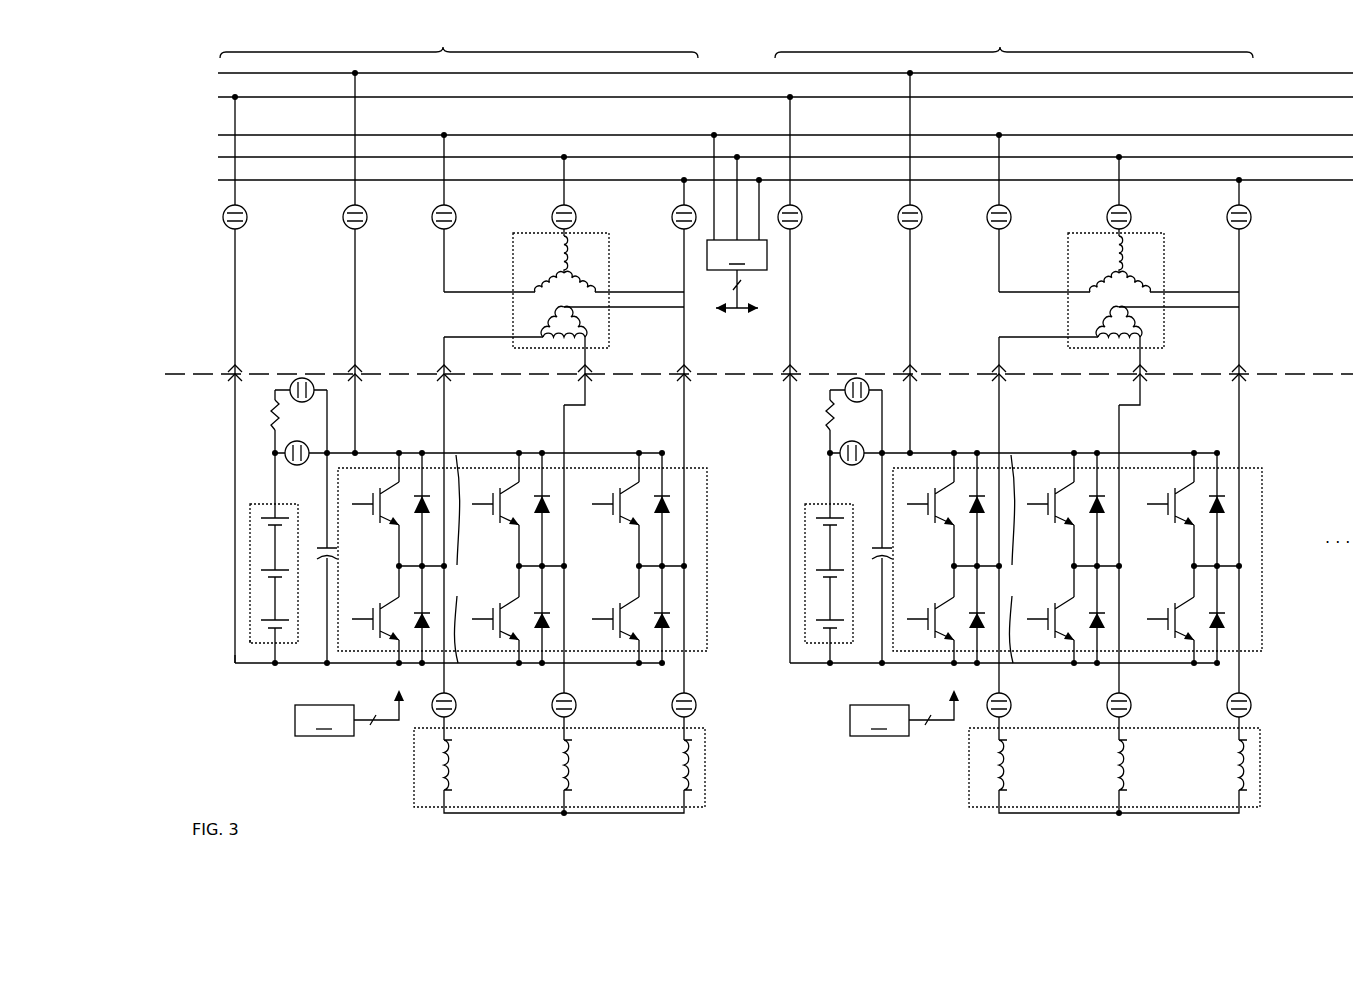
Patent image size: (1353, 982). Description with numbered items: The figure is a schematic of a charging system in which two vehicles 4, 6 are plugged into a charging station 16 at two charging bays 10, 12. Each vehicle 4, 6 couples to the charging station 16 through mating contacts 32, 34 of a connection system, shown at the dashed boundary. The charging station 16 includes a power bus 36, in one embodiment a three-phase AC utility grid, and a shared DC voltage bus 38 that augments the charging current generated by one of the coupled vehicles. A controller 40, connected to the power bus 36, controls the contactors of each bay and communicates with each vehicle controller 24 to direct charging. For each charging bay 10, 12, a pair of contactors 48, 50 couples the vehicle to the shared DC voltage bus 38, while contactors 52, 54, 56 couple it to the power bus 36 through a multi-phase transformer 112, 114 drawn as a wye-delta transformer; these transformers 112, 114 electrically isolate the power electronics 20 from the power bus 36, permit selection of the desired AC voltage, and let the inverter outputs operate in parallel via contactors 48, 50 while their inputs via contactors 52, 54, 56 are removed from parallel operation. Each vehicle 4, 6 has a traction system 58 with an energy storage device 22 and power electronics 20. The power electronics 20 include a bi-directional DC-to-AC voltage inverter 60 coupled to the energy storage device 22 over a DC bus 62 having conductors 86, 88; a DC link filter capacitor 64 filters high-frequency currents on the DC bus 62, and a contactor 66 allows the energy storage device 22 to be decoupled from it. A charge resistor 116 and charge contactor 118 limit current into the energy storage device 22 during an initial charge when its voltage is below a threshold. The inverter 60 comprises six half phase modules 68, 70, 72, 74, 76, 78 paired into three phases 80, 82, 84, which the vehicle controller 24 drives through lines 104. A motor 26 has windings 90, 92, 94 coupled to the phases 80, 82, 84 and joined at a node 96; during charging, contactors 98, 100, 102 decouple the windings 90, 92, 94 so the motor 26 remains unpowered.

The vehicle 4 is at (355, 780).
The vehicle 6 is at (1024, 456).
The charging bay 10 is at (459, 42).
The charging bay 12 is at (1014, 42).
The charging station 16 is at (195, 297).
The power electronics 20 is at (264, 710).
The energy storage device 22 is at (258, 504).
The vehicle controller 24 is at (324, 720).
The motor 26 is at (707, 765).
The mating contact 32 is at (233, 378).
The mating contact 34 is at (233, 370).
The power bus 36 is at (1302, 136).
The shared DC voltage bus 38 is at (1333, 74).
The controller 40 is at (737, 222).
The contactor 48 is at (249, 198).
The contactor 50 is at (369, 198).
The contactor 52 is at (458, 198).
The contactor 54 is at (578, 198).
The contactor 56 is at (679, 207).
The traction system 58 is at (219, 673).
The bi-directional DC-to-AC voltage inverter 60 is at (708, 547).
The DC bus 62 is at (463, 559).
The DC link filter capacitor 64 is at (326, 546).
The contactor 66 is at (301, 465).
The half phase module 68 is at (375, 523).
The half phase module 70 is at (375, 643).
The half phase module 72 is at (495, 523).
The half phase module 74 is at (495, 643).
The half phase module 76 is at (615, 523).
The half phase module 78 is at (615, 643).
The phase 80 is at (395, 432).
The phase 82 is at (515, 432).
The phase 84 is at (635, 432).
The conductor 86 is at (637, 452).
The conductor 88 is at (641, 664).
The winding 90 is at (456, 770).
The winding 92 is at (576, 770).
The winding 94 is at (680, 768).
The node 96 is at (566, 816).
The contactor 98 is at (452, 698).
The contactor 100 is at (572, 698).
The contactor 102 is at (692, 698).
The lines 104 is at (390, 722).
The multi-phase transformer 112 is at (513, 274).
The multi-phase transformer 114 is at (1101, 290).
The charge resistor 116 is at (269, 420).
The charge contactor 118 is at (303, 378).